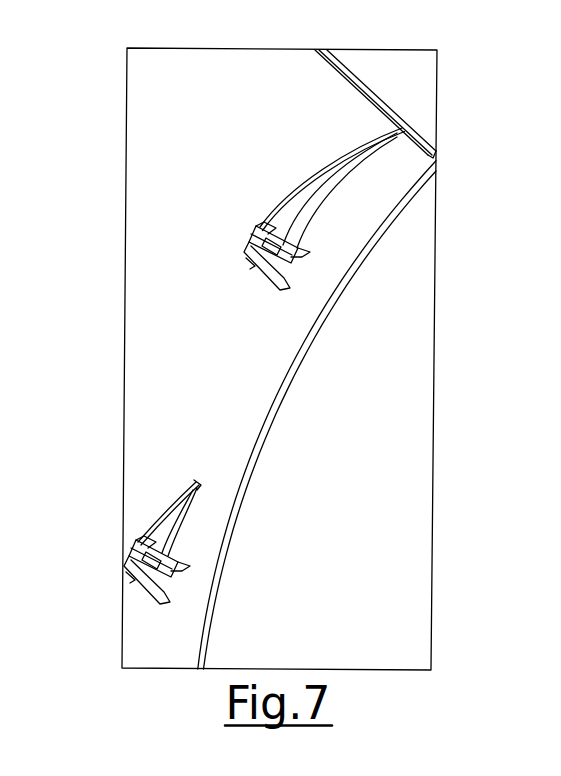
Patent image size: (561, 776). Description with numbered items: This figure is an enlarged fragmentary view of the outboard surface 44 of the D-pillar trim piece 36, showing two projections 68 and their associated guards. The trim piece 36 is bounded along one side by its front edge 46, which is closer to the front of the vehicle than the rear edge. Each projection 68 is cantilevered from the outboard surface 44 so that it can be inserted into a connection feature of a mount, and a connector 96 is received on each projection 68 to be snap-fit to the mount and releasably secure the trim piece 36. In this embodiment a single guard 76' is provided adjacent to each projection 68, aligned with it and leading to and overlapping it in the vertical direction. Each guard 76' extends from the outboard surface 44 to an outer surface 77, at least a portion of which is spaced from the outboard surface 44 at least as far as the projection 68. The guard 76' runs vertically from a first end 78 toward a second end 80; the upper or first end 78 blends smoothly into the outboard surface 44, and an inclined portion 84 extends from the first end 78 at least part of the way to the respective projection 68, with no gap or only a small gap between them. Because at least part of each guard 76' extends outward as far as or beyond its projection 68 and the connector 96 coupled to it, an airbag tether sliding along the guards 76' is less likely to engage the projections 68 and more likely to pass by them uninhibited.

The D-pillar trim piece 36 is at (238, 71).
The outboard surface 44 is at (157, 353).
The front edge 46 is at (270, 423).
The projection 68 is at (247, 246).
The guard 76' is at (265, 367).
The outer surface 77 is at (309, 168).
The first end 78 is at (400, 127).
The second end 80 is at (242, 260).
The inclined portion 84 is at (347, 155).
The connector 96 is at (258, 232).